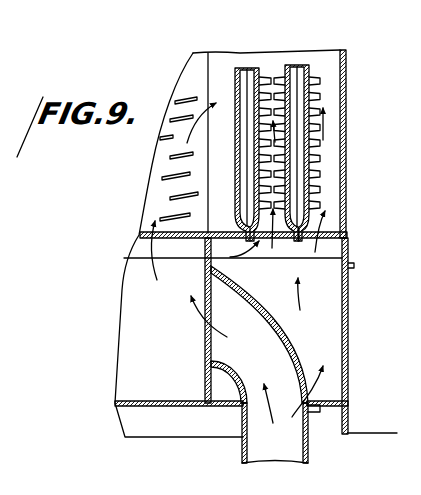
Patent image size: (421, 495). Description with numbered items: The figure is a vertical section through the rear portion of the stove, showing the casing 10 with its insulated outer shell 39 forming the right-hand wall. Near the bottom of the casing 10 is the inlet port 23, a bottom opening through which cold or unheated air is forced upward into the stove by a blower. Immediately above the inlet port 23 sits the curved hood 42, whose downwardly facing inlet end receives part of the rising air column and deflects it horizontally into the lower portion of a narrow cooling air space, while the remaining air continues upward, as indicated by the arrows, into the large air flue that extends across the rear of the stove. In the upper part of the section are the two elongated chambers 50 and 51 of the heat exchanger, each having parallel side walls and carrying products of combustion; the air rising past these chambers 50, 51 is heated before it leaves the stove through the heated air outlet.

The casing 10 is at (348, 184).
The inlet port 23 is at (240, 411).
The outer shell 39 is at (344, 119).
The hood 42 is at (293, 331).
The elongated chamber 50 is at (312, 76).
The elongated chamber 51 is at (253, 73).